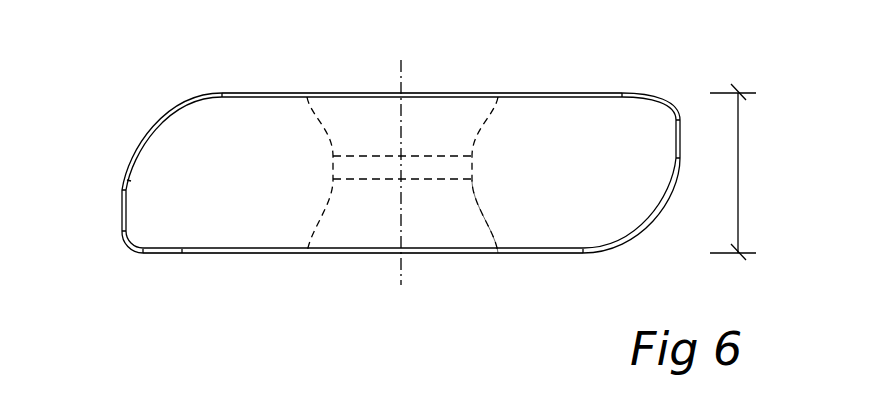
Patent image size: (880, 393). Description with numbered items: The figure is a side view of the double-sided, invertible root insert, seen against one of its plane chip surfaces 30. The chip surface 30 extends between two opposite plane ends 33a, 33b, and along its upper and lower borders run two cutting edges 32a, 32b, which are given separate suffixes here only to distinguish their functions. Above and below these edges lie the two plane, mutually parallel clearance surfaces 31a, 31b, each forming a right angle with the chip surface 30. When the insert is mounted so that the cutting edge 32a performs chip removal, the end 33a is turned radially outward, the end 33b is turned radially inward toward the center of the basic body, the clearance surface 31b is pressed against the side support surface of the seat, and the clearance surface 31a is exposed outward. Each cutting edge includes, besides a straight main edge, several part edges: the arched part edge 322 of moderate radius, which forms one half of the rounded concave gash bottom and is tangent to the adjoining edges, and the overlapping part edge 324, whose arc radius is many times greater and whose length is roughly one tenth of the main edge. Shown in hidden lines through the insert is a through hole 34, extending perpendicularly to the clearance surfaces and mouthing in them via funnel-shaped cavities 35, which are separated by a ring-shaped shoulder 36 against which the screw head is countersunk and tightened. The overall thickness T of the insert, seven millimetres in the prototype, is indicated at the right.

The chip surface 30 is at (589, 184).
The clearance surface 31a is at (556, 72).
The clearance surface 31b is at (529, 278).
The cutting edge 32a is at (257, 96).
The cutting edge 32b is at (247, 250).
The end 33a is at (122, 210).
The end 33b is at (681, 135).
The arched part edge 322 is at (166, 111).
The overlapping part edge 324 is at (160, 255).
The through hole 34 is at (421, 127).
The funnel-shaped cavity 35 is at (311, 121).
The ring-shaped shoulder 36 is at (478, 202).
The thickness T is at (737, 172).